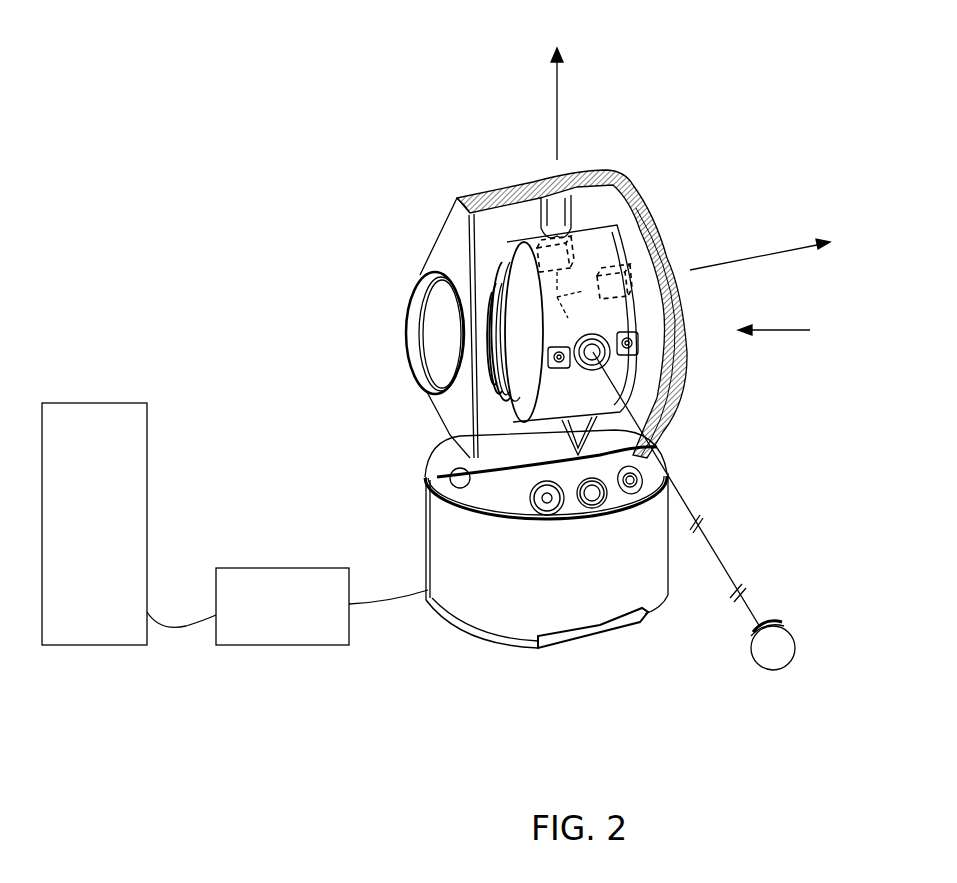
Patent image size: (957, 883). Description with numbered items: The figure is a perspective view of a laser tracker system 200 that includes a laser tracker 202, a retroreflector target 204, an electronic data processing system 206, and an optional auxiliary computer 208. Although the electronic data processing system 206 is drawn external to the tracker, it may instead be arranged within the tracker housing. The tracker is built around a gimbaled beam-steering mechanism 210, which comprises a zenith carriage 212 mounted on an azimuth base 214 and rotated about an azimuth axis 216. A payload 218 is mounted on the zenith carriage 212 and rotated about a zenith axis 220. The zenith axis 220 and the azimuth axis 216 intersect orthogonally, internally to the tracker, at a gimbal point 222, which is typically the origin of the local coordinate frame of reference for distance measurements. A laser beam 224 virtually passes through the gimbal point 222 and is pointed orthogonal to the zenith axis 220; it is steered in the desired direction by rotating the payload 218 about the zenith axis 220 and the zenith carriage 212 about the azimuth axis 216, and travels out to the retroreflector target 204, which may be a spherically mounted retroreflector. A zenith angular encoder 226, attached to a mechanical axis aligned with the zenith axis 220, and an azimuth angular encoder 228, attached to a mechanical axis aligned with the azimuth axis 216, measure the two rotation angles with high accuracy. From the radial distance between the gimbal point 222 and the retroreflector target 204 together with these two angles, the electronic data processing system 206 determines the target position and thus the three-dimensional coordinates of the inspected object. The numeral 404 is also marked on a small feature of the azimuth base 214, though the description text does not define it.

The laser tracker system 200 is at (193, 98).
The laser tracker 202 is at (376, 189).
The retroreflector target 204 is at (778, 622).
The electronic data processing system 206 is at (288, 568).
The auxiliary computer 208 is at (130, 403).
The gimbaled beam-steering mechanism 210 is at (791, 327).
The zenith carriage 212 is at (432, 256).
The azimuth base 214 is at (425, 512).
The azimuth axis 216 is at (560, 89).
The payload 218 is at (645, 378).
The zenith axis 220 is at (781, 253).
The gimbal point 222 is at (557, 298).
The laser beam 224 is at (746, 606).
The zenith angular encoder 226 is at (643, 280).
The azimuth angular encoder 228 is at (572, 247).
The indicator 404 is at (430, 470).